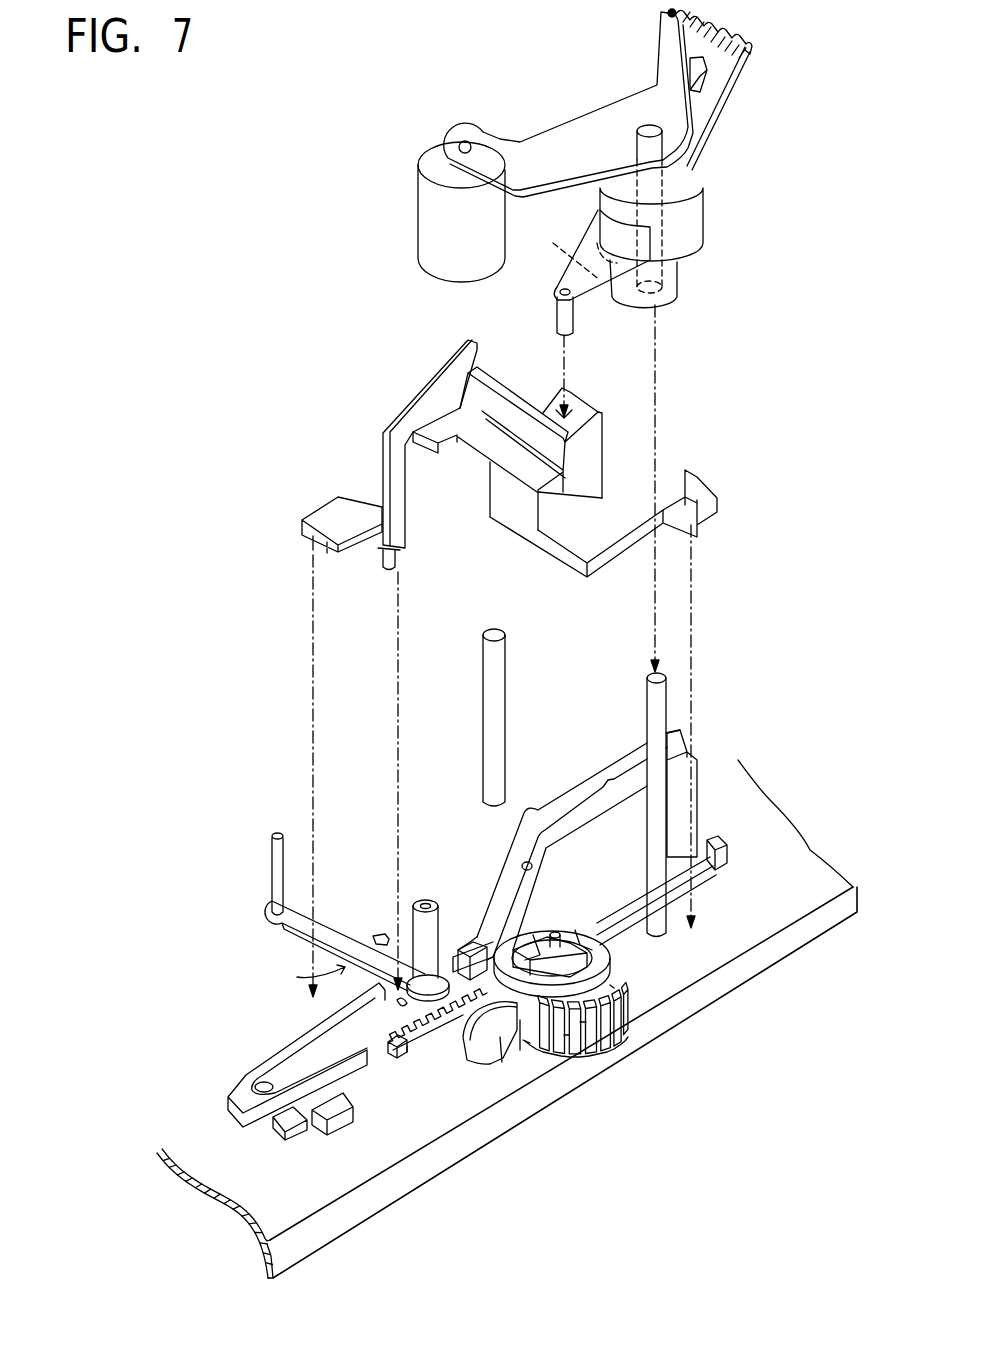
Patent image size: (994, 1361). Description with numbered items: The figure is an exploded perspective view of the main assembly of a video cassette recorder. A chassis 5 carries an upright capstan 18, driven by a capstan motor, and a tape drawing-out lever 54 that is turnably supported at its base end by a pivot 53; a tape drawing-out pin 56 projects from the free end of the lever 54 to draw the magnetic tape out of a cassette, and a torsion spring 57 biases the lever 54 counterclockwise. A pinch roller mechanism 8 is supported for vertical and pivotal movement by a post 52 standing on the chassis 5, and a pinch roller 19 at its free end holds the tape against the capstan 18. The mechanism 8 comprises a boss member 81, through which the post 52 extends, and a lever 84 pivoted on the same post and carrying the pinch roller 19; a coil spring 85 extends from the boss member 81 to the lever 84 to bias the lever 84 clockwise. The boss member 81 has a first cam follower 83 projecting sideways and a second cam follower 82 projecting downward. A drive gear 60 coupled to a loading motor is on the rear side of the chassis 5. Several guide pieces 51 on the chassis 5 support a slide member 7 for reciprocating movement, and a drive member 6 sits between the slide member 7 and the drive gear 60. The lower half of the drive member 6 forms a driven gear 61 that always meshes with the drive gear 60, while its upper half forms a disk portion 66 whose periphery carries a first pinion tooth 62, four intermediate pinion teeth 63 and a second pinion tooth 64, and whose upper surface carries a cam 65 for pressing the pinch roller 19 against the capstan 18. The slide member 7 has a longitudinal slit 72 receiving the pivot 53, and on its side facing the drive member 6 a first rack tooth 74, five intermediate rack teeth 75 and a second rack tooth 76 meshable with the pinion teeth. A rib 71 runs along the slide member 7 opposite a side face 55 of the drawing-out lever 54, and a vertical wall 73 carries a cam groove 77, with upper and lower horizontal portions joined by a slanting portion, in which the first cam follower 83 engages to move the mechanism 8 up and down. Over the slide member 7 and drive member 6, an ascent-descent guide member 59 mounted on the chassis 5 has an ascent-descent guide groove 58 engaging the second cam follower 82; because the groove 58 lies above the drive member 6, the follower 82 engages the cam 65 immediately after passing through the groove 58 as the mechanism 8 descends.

The chassis 5 is at (780, 910).
The drive member 6 is at (560, 930).
The slide member 7 is at (573, 787).
The pinch roller mechanism 8 is at (690, 187).
The capstan 18 is at (499, 671).
The pinch roller 19 is at (438, 207).
The guide piece 51 is at (353, 1105).
The post 52 is at (658, 718).
The pivot 53 is at (440, 920).
The tape drawing-out lever 54 is at (343, 915).
The side face 55 is at (305, 980).
The tape drawing-out pin 56 is at (274, 870).
The torsion spring 57 is at (380, 934).
The ascent-descent guide groove 58 is at (582, 408).
The ascent-descent guide member 59 is at (595, 438).
The drive gear 60 is at (497, 1043).
The driven gear 61 is at (550, 1040).
The first pinion tooth 62 is at (523, 1057).
The intermediate pinion teeth 63 is at (573, 1027).
The second pinion tooth 64 is at (617, 990).
The cam 65 is at (557, 930).
The disk portion 66 is at (602, 948).
The rib 71 is at (303, 1038).
The slit 72 is at (262, 1082).
The vertical wall 73 is at (677, 803).
The first rack tooth 74 is at (470, 1050).
The intermediate rack teeth 75 is at (436, 1040).
The second rack tooth 76 is at (380, 1060).
The cam groove 77 is at (523, 862).
The boss member 81 is at (690, 237).
The second cam follower 82 is at (556, 310).
The first cam follower 83 is at (567, 250).
The lever 84 is at (612, 118).
The coil spring 85 is at (735, 28).